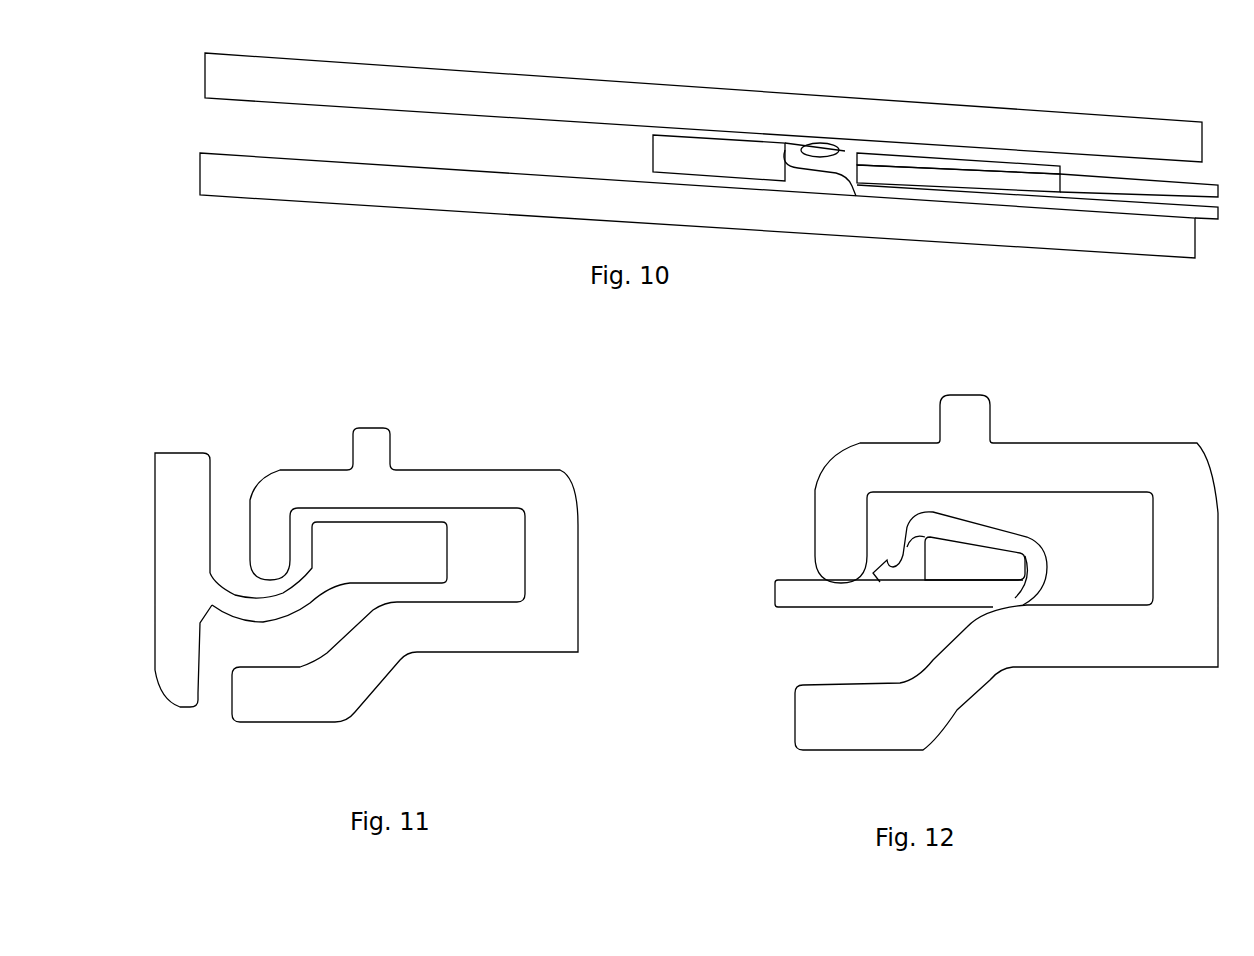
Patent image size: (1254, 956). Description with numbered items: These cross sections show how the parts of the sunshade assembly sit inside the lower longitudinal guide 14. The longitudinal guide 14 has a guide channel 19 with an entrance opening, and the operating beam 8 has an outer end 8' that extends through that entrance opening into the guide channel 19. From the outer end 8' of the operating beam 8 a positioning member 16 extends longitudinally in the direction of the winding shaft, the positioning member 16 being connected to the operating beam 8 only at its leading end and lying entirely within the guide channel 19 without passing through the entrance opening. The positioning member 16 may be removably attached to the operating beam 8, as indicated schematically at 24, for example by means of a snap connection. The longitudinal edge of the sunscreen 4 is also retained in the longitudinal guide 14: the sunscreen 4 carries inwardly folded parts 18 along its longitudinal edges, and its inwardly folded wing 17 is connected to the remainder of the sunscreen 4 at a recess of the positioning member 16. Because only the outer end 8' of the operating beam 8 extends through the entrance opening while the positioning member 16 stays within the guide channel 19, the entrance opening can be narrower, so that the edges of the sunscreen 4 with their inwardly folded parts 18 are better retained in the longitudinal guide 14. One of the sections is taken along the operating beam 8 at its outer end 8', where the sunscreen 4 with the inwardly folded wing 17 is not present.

In FIG. 10, the longitudinal guide 14 is at (598, 78).
In FIG. 11, the longitudinal guide 14 is at (525, 468).
In FIG. 12, the longitudinal guide 14 is at (1100, 670).
In FIG. 10, the operating beam 8 is at (754, 116).
In FIG. 11, the operating beam 8 is at (183, 555).
In FIG. 11, the outer end of the operating beam 8' is at (328, 579).
In FIG. 10, the removable attachment 24 is at (822, 140).
In FIG. 10, the inwardly folded parts 18 is at (1200, 186).
In FIG. 10, the sunscreen 4 is at (1218, 212).
In FIG. 12, the sunscreen 4 is at (840, 594).
In FIG. 10, the positioning member 16 is at (968, 178).
In FIG. 12, the positioning member 16 is at (1003, 566).
In FIG. 10, the inwardly folded wing 17 is at (1017, 170).
In FIG. 12, the inwardly folded wing 17 is at (983, 532).
In FIG. 11, the guide channel 19 is at (408, 552).